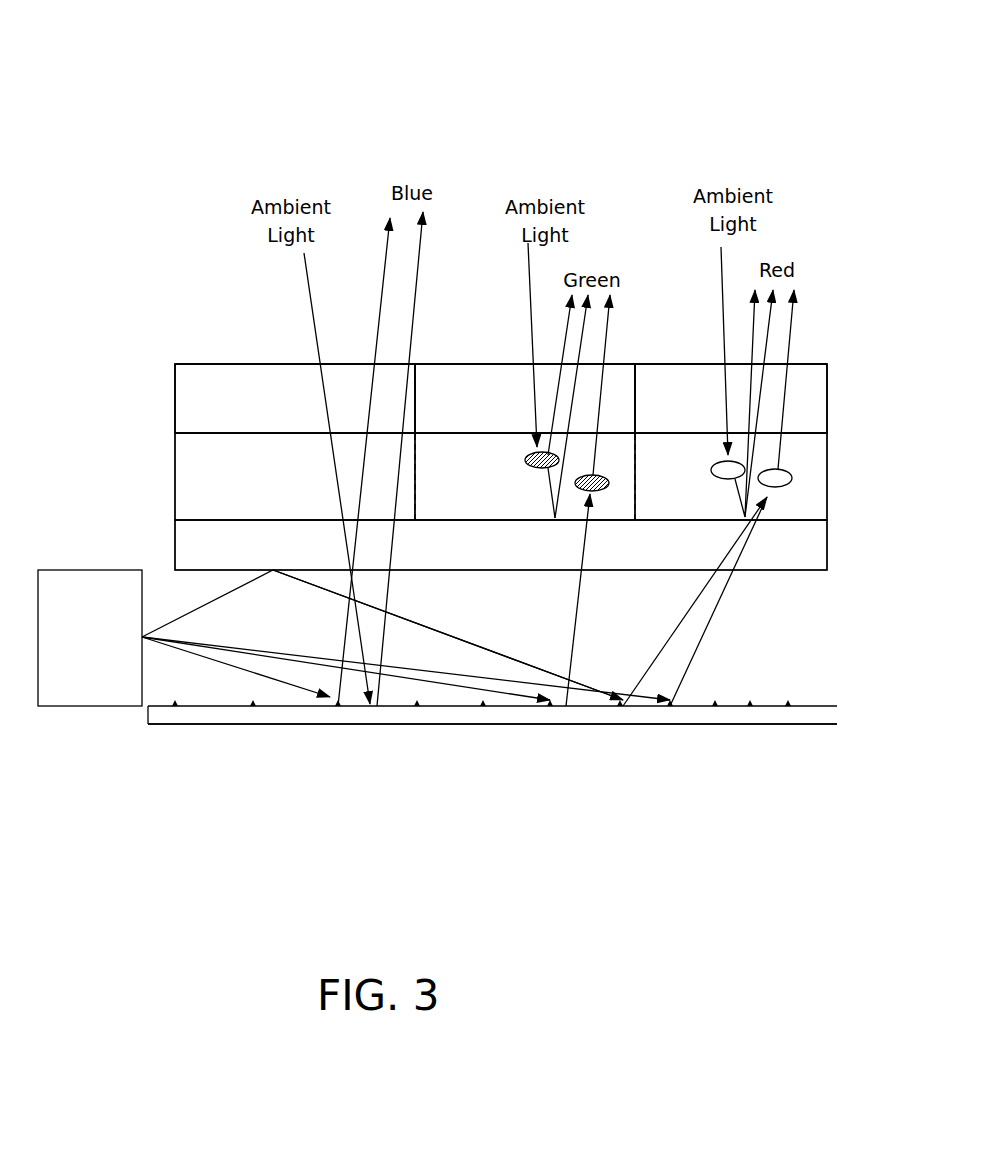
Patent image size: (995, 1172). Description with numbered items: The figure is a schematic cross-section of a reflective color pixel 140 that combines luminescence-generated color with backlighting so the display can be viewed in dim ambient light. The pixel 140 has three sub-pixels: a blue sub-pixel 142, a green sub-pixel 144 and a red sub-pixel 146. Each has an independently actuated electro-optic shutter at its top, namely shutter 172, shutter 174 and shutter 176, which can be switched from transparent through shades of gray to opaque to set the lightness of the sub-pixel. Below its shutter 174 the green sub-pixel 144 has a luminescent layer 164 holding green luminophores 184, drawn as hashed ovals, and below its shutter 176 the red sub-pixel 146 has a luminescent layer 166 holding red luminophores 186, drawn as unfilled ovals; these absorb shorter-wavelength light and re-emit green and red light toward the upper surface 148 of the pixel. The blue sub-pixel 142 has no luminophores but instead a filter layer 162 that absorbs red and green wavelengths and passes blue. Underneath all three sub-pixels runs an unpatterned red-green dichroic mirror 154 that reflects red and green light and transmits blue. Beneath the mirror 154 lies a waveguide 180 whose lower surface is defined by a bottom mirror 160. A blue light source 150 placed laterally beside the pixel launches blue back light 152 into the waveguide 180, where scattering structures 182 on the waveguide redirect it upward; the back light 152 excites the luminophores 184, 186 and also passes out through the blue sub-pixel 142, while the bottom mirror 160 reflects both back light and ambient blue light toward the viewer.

The reflective color pixel 140 is at (304, 118).
The blue sub-pixel 142 is at (268, 364).
The green sub-pixel 144 is at (492, 364).
The red sub-pixel 146 is at (665, 364).
The upper surface 148 is at (238, 364).
The light source 150 is at (113, 570).
The back light 152 is at (177, 648).
The red-green dichroic mirror 154 is at (473, 564).
The bottom mirror 160 is at (290, 708).
The filter layer 162 is at (238, 461).
The luminescent layer 164 is at (480, 463).
The luminescent layer 166 is at (640, 508).
The shutter 172 is at (238, 424).
The shutter 174 is at (464, 418).
The shutter 176 is at (639, 425).
The waveguide 180 is at (725, 655).
The scattering structures 182 is at (792, 705).
The green luminophores 184 is at (607, 482).
The red luminophores 186 is at (783, 487).